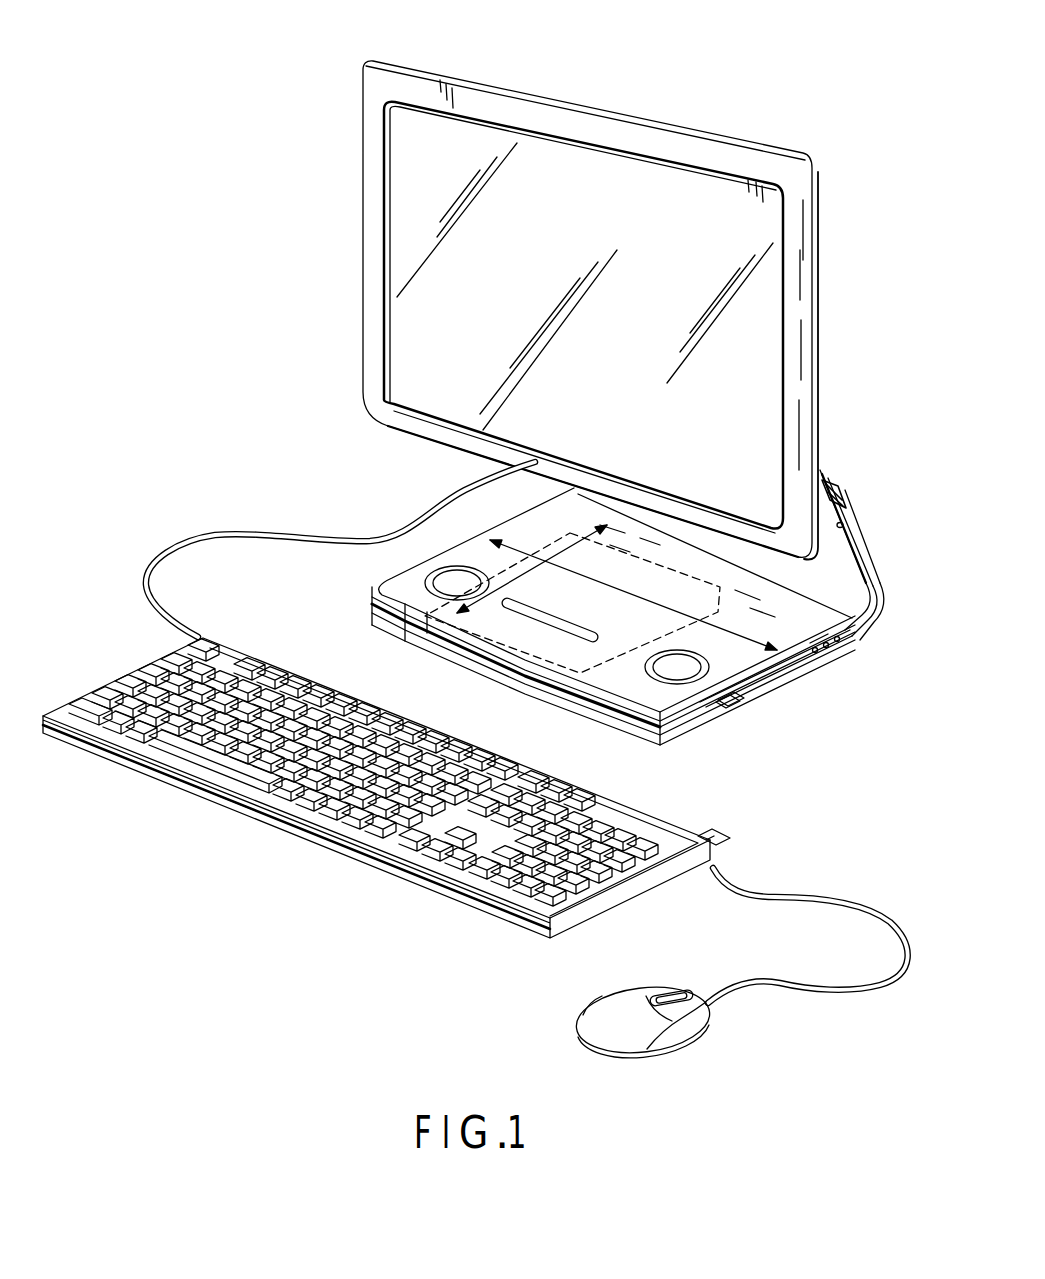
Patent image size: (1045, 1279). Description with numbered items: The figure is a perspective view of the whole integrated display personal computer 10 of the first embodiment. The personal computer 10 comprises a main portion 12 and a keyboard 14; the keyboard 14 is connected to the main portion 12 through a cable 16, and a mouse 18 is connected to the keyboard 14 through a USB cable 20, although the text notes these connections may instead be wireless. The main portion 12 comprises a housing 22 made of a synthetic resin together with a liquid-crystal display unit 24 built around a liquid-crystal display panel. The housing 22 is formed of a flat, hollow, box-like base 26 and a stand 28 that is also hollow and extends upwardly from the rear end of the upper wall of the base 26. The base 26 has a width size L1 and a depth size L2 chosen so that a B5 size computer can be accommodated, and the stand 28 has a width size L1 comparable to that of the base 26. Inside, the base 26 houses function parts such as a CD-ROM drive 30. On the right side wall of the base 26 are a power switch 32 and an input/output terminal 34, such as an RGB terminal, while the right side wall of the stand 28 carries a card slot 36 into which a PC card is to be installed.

The personal computer 10 is at (825, 100).
The main portion 12 is at (613, 618).
The keyboard 14 is at (258, 812).
The cable 16 is at (294, 530).
The mouse 18 is at (620, 1047).
The USB cable 20 is at (862, 900).
The housing 22 is at (883, 543).
The liquid-crystal display unit 24 is at (372, 160).
The base 26 is at (878, 604).
The stand 28 is at (873, 560).
The CD-ROM drive 30 is at (722, 606).
The power switch 32 is at (728, 705).
The input/output terminal 34 is at (818, 642).
The card slot 36 is at (848, 528).
The width size L1 is at (633, 588).
The depth size L2 is at (562, 552).